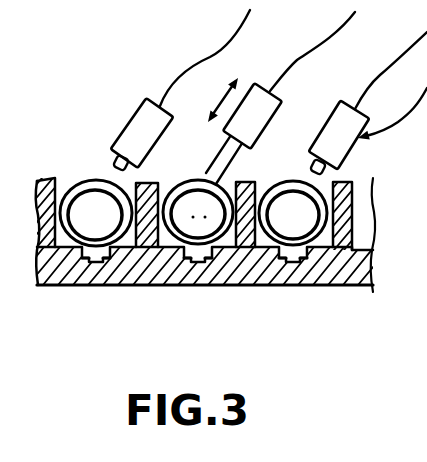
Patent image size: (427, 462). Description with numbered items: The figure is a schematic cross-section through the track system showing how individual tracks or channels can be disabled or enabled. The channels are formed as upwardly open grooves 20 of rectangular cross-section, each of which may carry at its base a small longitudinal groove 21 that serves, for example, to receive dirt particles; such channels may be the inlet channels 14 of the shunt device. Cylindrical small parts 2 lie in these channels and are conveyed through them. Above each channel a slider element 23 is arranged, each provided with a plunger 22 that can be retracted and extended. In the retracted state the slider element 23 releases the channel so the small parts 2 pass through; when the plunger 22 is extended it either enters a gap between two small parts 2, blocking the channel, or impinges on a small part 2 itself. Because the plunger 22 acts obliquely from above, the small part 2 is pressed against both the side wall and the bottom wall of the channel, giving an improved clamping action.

The small part 2 is at (58, 248).
The inlet channel 14 is at (202, 256).
The groove 20 is at (148, 290).
The longitudinal groove 21 is at (98, 290).
The plunger 22 is at (112, 158).
The slider element 23 is at (121, 110).